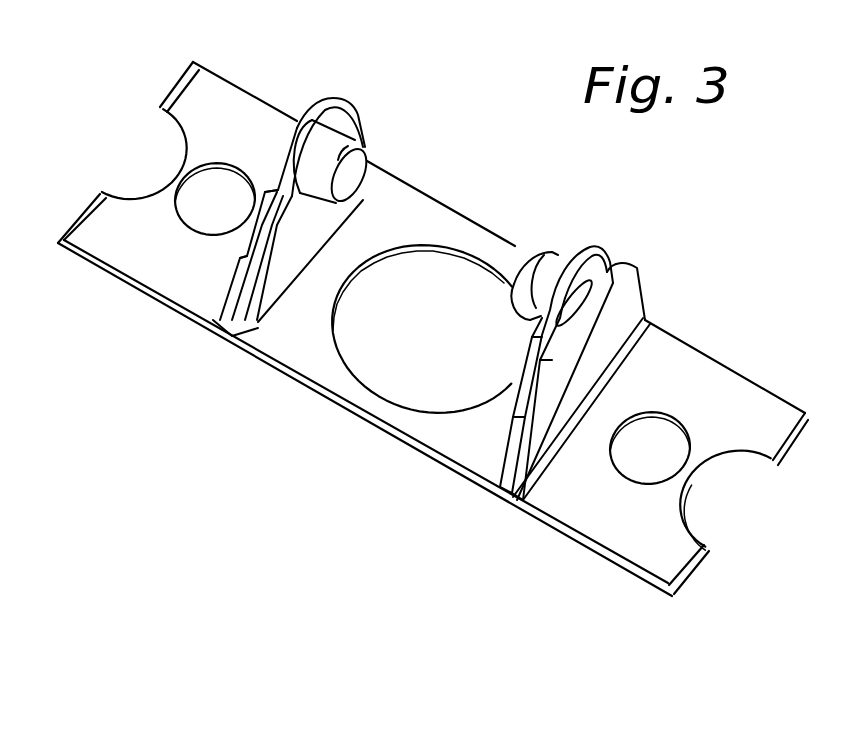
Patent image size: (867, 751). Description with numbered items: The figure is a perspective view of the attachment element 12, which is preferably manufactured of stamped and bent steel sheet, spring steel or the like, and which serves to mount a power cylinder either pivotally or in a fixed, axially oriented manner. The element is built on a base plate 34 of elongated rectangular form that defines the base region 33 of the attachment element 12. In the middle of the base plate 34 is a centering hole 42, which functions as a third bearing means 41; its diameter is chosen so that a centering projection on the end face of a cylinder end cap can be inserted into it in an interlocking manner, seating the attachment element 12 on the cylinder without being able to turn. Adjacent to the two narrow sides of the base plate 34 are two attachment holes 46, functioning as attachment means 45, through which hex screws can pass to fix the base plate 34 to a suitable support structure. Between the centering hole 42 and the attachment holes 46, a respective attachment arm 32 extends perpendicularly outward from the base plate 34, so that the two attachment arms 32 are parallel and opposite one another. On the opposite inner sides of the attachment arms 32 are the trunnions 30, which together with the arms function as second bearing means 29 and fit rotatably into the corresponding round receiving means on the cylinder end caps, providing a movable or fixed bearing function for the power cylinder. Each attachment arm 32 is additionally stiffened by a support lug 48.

The attachment element 12 is at (433, 318).
The second bearing means 29 is at (439, 180).
The trunnions 30 is at (367, 123).
The attachment arms 32 is at (462, 270).
The base region 33 is at (586, 264).
The base plate 34 is at (385, 213).
The third bearing means 41 is at (422, 383).
The centering hole 42 is at (420, 400).
The attachment means 45 is at (441, 347).
The attachment holes 46 is at (193, 218).
The support lug 48 is at (623, 303).